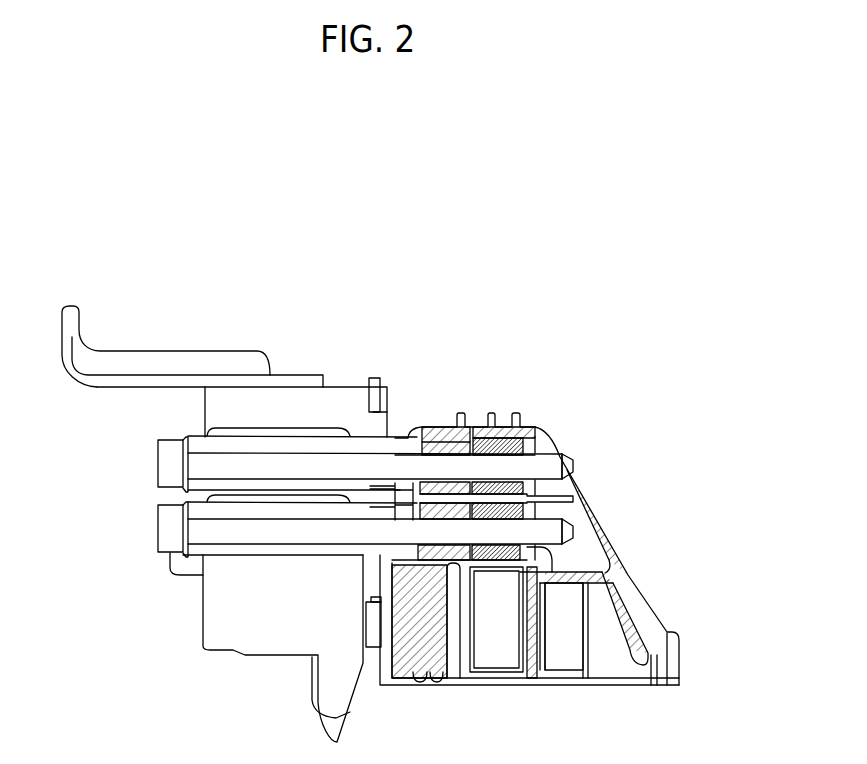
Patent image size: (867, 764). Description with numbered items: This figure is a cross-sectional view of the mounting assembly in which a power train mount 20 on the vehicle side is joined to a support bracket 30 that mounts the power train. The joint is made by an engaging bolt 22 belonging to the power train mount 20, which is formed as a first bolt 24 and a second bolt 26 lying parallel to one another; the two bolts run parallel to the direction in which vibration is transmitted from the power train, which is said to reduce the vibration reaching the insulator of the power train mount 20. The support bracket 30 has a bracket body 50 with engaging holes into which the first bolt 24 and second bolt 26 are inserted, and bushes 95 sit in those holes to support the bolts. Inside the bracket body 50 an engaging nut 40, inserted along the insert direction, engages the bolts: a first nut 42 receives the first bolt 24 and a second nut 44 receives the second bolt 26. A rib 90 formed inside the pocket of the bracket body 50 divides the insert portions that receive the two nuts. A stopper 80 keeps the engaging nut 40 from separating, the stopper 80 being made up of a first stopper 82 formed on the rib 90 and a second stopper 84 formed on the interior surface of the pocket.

The power train mount 20 is at (100, 332).
The engaging bolt 22 is at (107, 467).
The first bolt 24 is at (172, 477).
The second bolt 26 is at (172, 520).
The support bracket 30 is at (463, 699).
The engaging nut 40 is at (474, 446).
The first nut 42 is at (484, 447).
The second nut 44 is at (520, 485).
The bracket body 50 is at (673, 680).
The stopper 80 is at (619, 498).
The first stopper 82 is at (567, 458).
The second stopper 84 is at (575, 485).
The rib 90 is at (570, 501).
The bushes 95 is at (450, 505).